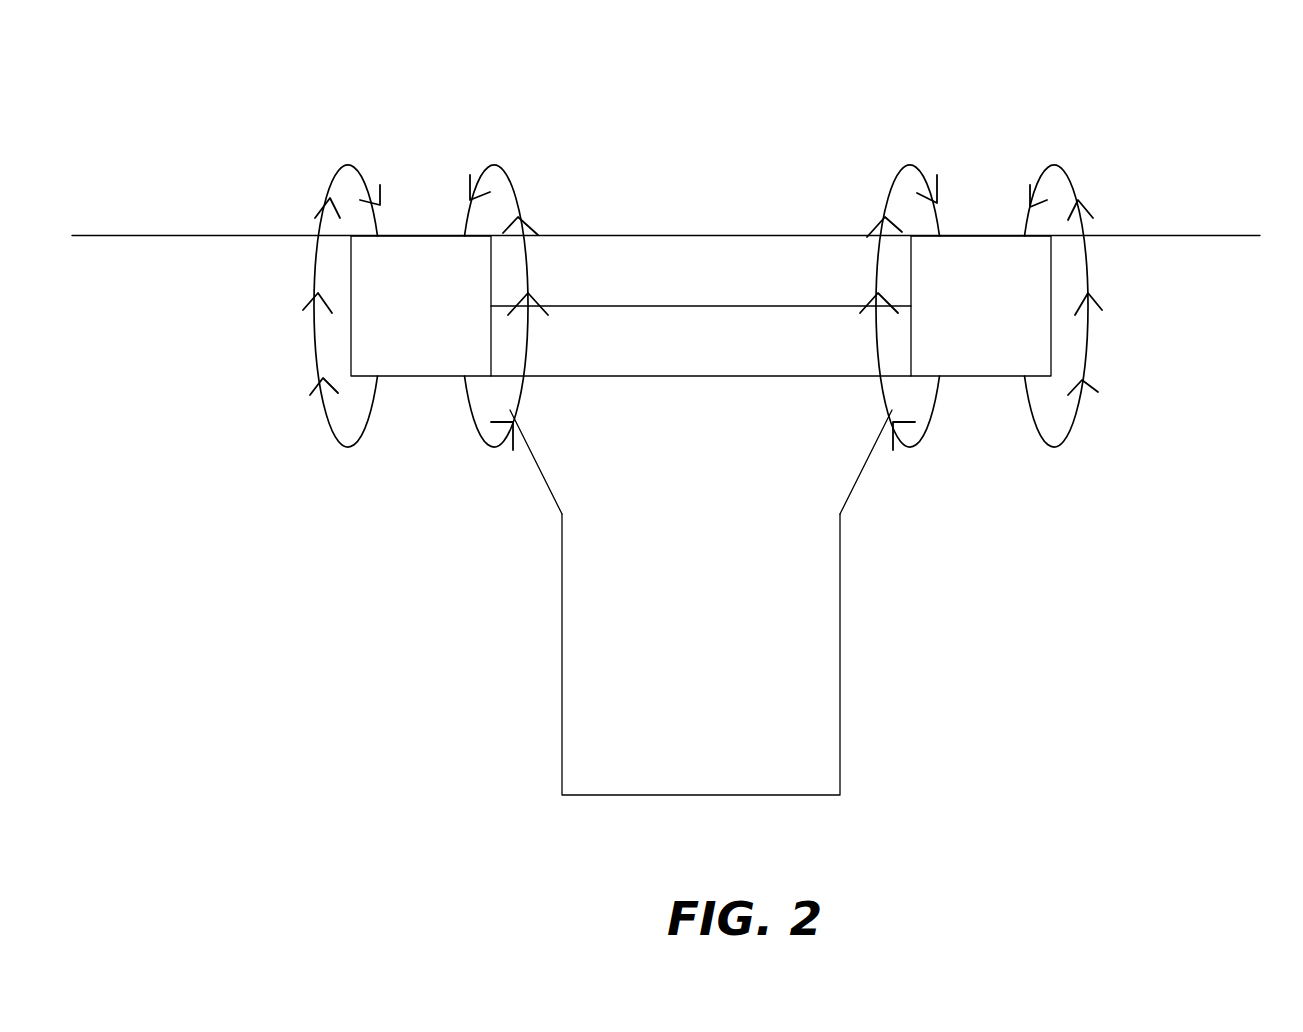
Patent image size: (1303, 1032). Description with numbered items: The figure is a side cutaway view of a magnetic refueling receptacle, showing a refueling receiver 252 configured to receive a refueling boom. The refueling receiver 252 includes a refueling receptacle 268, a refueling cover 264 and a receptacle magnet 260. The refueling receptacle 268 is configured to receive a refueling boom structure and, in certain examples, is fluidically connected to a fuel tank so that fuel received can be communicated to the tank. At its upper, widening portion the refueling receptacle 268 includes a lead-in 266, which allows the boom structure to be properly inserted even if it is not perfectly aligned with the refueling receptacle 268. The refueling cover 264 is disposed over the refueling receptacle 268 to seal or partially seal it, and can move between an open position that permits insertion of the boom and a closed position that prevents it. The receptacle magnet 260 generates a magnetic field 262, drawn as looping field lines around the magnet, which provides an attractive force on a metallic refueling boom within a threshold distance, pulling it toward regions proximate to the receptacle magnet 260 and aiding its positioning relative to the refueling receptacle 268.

The refueling receiver 252 is at (268, 98).
The receptacle magnet 260 is at (425, 235).
The magnetic field 262 is at (330, 198).
The refueling cover 264 is at (684, 376).
The lead-in 266 is at (868, 467).
The refueling receptacle 268 is at (841, 655).